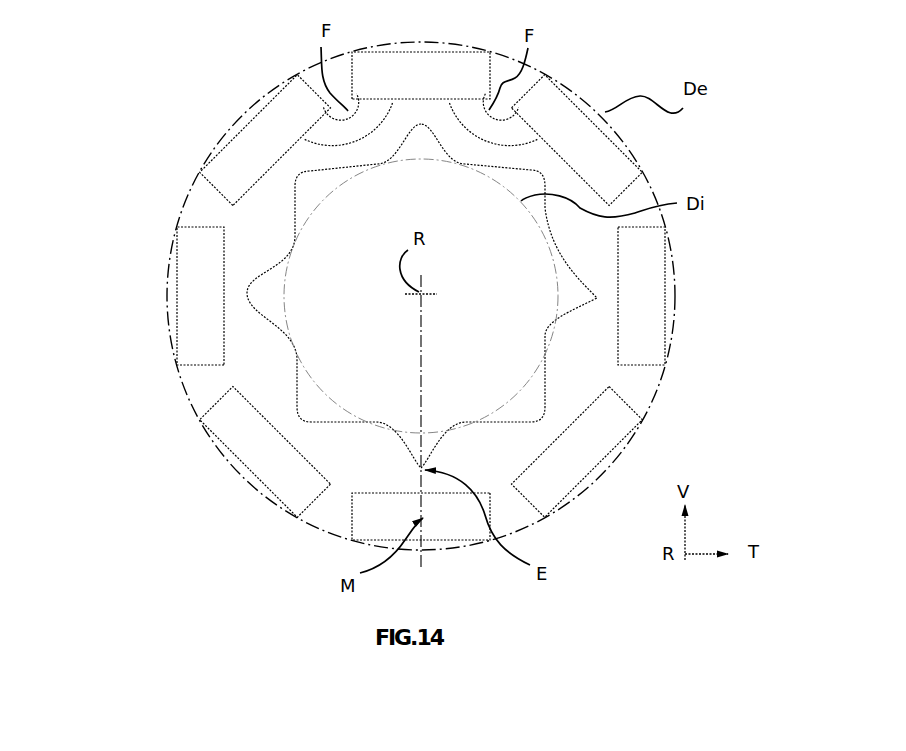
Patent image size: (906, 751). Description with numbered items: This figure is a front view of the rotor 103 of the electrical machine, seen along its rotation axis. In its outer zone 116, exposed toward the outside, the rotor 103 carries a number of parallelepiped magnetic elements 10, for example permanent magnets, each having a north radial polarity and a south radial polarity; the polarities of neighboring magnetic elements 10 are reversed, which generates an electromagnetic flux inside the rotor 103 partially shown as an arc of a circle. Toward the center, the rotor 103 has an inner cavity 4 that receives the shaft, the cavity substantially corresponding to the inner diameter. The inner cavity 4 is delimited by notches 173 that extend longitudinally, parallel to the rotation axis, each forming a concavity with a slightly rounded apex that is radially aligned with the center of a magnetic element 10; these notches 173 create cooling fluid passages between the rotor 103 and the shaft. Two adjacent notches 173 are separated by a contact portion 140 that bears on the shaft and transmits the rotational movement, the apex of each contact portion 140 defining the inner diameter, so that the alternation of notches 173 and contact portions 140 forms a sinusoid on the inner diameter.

The outer zone 116 is at (165, 184).
The inner cavity 4 is at (527, 287).
The contact portion 140 is at (293, 241).
The notch 173 is at (315, 405).
The magnetic element 10 is at (455, 70).
The rotor 103 is at (330, 150).